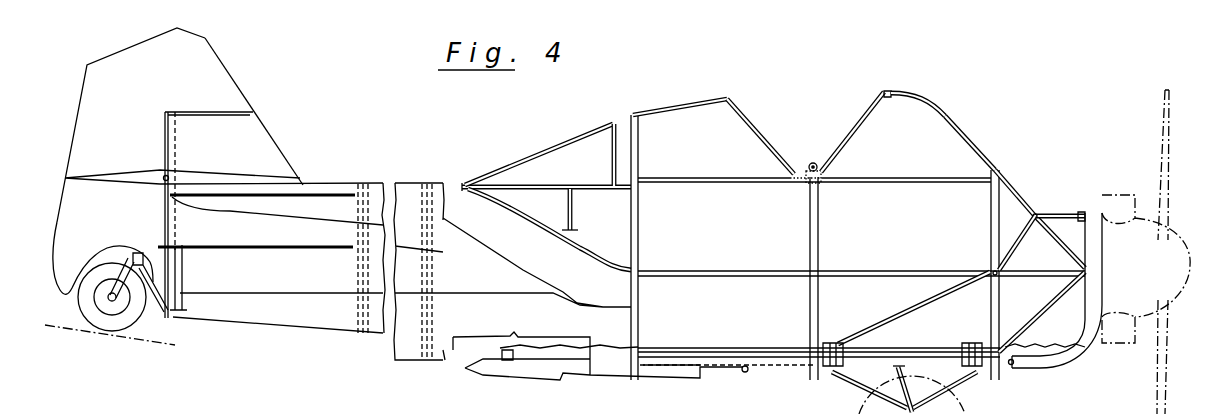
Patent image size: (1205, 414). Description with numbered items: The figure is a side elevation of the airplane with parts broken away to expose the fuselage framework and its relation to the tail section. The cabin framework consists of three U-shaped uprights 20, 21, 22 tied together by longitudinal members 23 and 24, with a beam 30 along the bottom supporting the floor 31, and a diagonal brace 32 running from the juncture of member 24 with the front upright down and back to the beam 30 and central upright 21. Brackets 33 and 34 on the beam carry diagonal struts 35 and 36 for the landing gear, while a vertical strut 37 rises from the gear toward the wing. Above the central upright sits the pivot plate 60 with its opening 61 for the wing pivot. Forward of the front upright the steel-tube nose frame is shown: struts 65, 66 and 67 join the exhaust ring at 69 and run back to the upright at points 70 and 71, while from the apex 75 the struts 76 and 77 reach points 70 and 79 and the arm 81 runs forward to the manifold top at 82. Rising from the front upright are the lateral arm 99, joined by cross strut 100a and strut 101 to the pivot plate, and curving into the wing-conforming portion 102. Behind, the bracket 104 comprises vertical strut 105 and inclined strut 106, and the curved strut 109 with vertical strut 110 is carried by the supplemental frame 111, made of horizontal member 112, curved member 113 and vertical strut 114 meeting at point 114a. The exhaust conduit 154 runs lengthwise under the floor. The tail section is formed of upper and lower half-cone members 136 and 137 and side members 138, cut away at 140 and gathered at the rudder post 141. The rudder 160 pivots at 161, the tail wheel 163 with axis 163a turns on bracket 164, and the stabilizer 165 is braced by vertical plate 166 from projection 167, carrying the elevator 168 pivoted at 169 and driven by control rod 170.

The front upright 20 is at (991, 213).
The central upright 21 is at (810, 222).
The rear upright 22 is at (639, 214).
The longitudinal member 23 is at (730, 176).
The longitudinal member 24 is at (735, 270).
The beam 30 is at (796, 358).
The floor 31 is at (542, 348).
The diagonal brace 32 is at (910, 298).
The bracket 33 is at (846, 364).
The bracket 34 is at (961, 364).
The diagonal strut 35 is at (882, 395).
The diagonal strut 36 is at (943, 395).
The vertical strut 37 is at (908, 382).
The pivot plate 60 is at (810, 170).
The opening 61 is at (816, 162).
The strut 65 is at (1054, 234).
The strut 66 is at (1038, 278).
The strut 67 is at (1038, 317).
The joint 69 is at (1102, 270).
The joint point 70 is at (999, 276).
The joint point 71 is at (1005, 369).
The apex 75 is at (1033, 218).
The strut 76 is at (1013, 250).
The strut 77 is at (1015, 192).
The joint point 79 is at (1001, 178).
The arm 81 is at (1054, 216).
The joint 82 is at (1082, 212).
The lateral arm 99 is at (962, 136).
The cross strut 100a is at (887, 90).
The inclined strut 101 is at (862, 109).
The wing-conforming portion 102 is at (912, 93).
The bracket 104 is at (678, 107).
The vertical strut 105 is at (638, 140).
The inclined strut 106 is at (753, 120).
The curved inclined strut 109 is at (556, 142).
The vertical strut 110 is at (612, 159).
The supplemental frame 111 is at (588, 250).
The horizontal member 112 is at (537, 186).
The curved member 113 is at (537, 214).
The vertical strut 114 is at (573, 213).
The common meeting point 114a is at (465, 182).
The upper tail member 136 is at (332, 186).
The lower tail member 137 is at (305, 320).
The side member 138 is at (287, 305).
The cut-away portion 140 is at (190, 199).
The rudder post 141 is at (184, 278).
The exhaust conduit 154 is at (742, 371).
The rudder 160 is at (214, 63).
The rudder pivot 161 is at (165, 118).
The tail wheel 163 is at (80, 312).
The wheel axis 163a is at (110, 302).
The bracket 164 is at (133, 257).
The stabilizer 165 is at (205, 172).
The vertical plate 166 is at (268, 143).
The upward projection 167 is at (176, 146).
The elevator 168 is at (112, 177).
The elevator pivot 169 is at (163, 178).
The control rod 170 is at (290, 197).